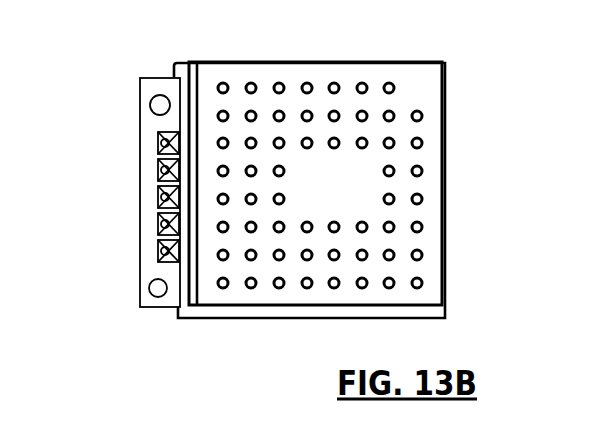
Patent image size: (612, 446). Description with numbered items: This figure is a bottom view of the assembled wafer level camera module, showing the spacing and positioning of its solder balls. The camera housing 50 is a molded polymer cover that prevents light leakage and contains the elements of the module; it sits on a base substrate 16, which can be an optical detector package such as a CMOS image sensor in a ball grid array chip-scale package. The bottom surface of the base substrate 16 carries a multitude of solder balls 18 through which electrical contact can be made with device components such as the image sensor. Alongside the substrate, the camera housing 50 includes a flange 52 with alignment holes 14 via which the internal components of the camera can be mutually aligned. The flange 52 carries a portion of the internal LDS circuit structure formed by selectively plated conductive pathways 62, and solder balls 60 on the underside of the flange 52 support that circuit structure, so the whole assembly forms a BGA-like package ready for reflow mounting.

The alignment holes 14 is at (157, 112).
The base substrate 16 is at (331, 283).
The solder balls 18 is at (333, 82).
The camera housing 50 is at (218, 312).
The flange 52 is at (168, 308).
The solder balls 60 is at (160, 200).
The conductive pathways 62 is at (158, 130).